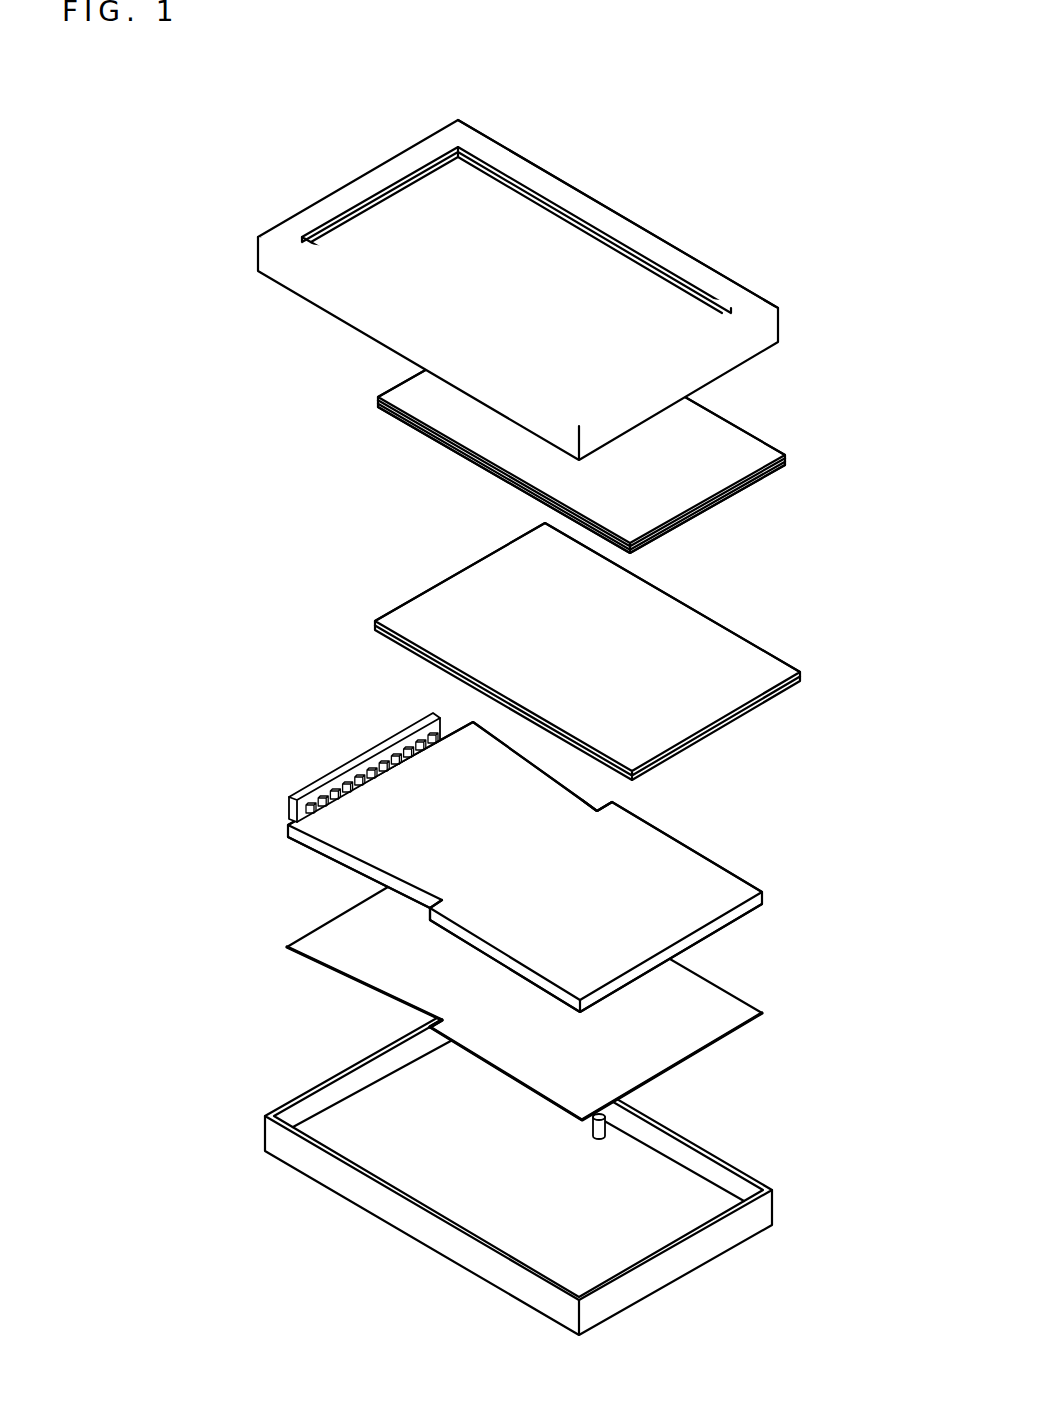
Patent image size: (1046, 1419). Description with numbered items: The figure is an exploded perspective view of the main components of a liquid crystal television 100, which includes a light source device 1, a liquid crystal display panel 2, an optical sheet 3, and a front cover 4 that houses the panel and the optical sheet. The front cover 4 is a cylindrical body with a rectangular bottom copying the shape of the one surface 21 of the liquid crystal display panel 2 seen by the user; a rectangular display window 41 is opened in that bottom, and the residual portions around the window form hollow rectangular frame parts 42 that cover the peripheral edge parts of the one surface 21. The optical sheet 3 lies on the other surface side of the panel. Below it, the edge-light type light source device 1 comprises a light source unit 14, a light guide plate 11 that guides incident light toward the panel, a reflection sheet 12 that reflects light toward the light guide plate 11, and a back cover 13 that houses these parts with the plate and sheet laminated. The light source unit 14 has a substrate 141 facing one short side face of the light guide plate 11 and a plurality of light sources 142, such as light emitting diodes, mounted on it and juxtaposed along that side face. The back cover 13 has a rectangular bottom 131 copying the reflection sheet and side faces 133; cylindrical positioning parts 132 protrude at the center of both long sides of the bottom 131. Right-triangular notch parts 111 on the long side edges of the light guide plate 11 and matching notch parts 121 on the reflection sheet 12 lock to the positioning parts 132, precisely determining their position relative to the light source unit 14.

The liquid crystal television 100 is at (813, 157).
The light source device 1 is at (166, 735).
The liquid crystal display panel 2 is at (552, 431).
The one surface of the liquid crystal display panel 21 is at (730, 437).
The optical sheet 3 is at (393, 572).
The front cover 4 is at (485, 273).
The display window 41 is at (575, 213).
The frame parts 42 is at (515, 165).
The light guide plate 11 is at (526, 867).
The notch parts 111 is at (332, 852).
The reflection sheet 12 is at (549, 980).
The notch parts 121 is at (360, 988).
The back cover 13 is at (567, 1170).
The bottom 131 is at (403, 1167).
The positioning parts 132 is at (606, 1118).
The side faces 133 is at (722, 1180).
The light source unit 14 is at (318, 757).
The substrate 141 is at (290, 790).
The light sources 142 is at (392, 752).